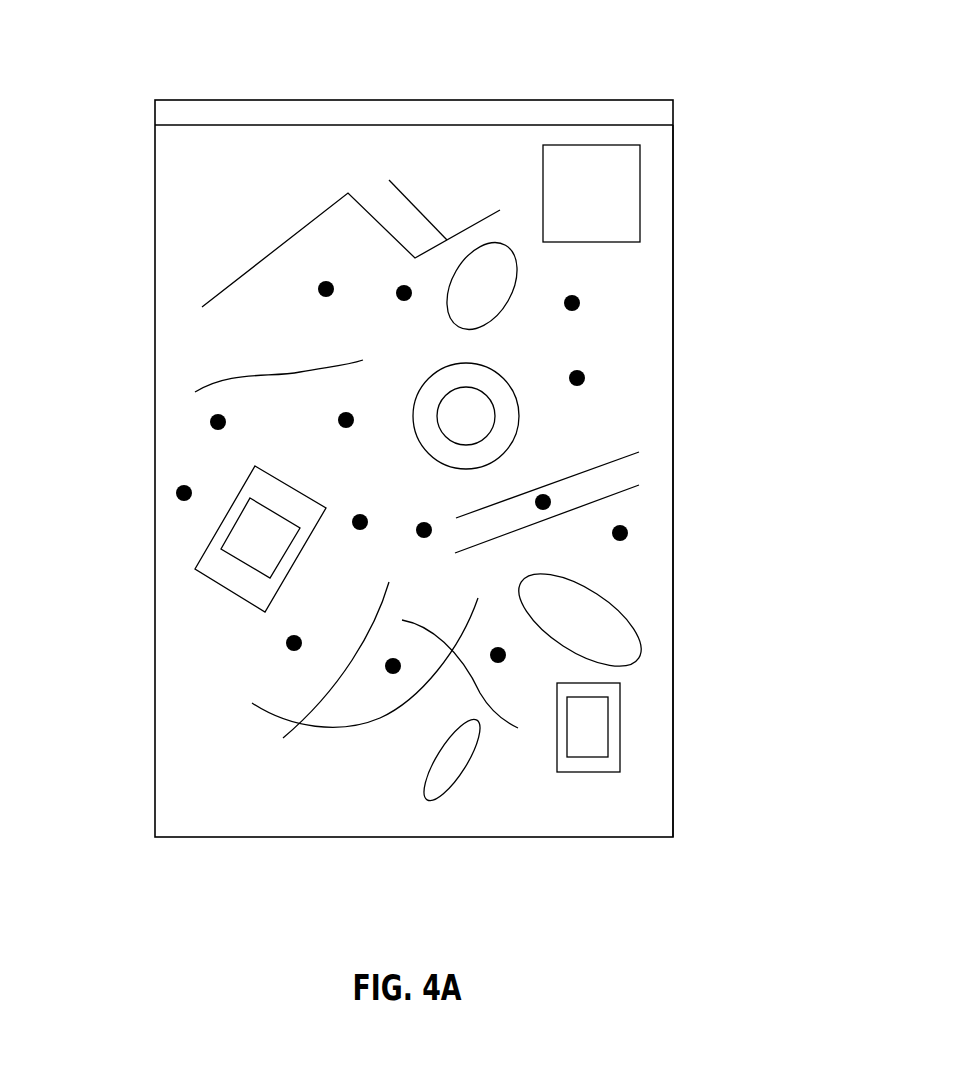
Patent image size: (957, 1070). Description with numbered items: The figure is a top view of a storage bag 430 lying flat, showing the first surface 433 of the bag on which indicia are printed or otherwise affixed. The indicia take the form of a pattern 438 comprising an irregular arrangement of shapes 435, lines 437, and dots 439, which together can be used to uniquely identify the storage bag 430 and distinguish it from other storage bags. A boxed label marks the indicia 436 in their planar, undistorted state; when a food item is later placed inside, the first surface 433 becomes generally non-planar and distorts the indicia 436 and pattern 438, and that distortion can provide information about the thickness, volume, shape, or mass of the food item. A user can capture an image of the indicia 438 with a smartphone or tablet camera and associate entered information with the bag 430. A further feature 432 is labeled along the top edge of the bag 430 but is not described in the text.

The storage bag 430 is at (107, 133).
The header region 432 is at (658, 113).
The first surface 433 is at (648, 330).
The shapes 435 is at (468, 767).
The indicia 436 is at (591, 193).
The lines 437 is at (633, 483).
The pattern 438 is at (207, 613).
The dots 439 is at (210, 423).